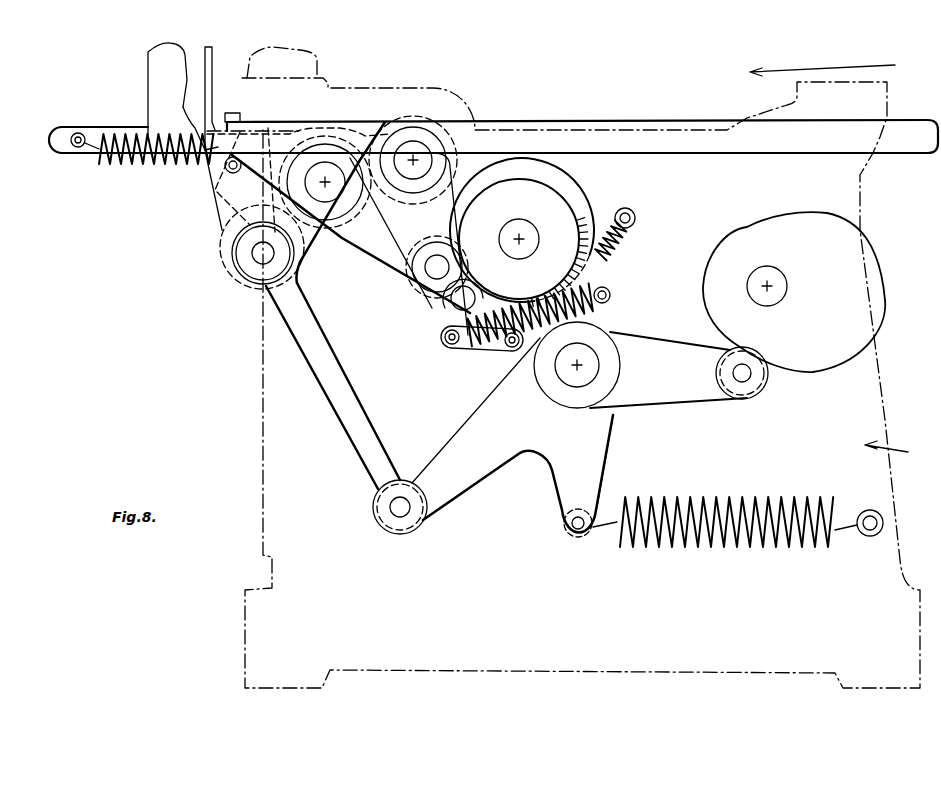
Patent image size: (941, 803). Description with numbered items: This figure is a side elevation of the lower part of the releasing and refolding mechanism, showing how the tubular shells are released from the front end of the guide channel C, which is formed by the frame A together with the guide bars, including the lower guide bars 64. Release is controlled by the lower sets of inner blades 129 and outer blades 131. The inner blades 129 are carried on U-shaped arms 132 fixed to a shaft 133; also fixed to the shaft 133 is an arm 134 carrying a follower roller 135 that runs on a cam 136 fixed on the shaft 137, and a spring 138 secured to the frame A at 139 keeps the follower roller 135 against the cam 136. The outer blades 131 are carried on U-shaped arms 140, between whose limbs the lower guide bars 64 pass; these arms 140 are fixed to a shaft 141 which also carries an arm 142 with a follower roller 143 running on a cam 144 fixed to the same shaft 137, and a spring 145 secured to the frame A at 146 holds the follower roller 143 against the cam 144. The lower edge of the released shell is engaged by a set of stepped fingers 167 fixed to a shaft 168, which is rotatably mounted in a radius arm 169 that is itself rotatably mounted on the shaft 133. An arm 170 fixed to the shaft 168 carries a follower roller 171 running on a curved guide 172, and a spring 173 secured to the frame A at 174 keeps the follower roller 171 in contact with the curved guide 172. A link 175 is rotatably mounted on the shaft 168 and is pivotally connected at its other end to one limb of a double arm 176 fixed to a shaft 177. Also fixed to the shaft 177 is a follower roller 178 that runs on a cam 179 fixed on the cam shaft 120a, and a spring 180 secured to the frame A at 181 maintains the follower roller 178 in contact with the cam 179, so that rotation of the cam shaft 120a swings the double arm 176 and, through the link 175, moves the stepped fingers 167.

The lower guide bars 64 is at (738, 140).
The stepped fingers 167 is at (208, 52).
The follower roller 171 is at (203, 110).
The curved guide 172 is at (203, 127).
The outer blades 131 is at (227, 113).
The inner blades 129 is at (235, 113).
The spring anchorage on frame 174 is at (87, 157).
The spring 173 is at (147, 163).
The arm 170 is at (217, 187).
The radius arm 169 is at (257, 198).
The shaft 168 is at (257, 255).
The U-shaped arms 132 is at (298, 272).
The link 175 is at (347, 413).
The shaft 133 is at (332, 190).
The arm 134 is at (395, 258).
The follower roller 143 is at (425, 287).
The arm 142 is at (440, 323).
The follower roller 135 is at (470, 342).
The U-shaped arms 140 is at (387, 122).
The shaft 141 is at (418, 155).
The cam 136 is at (563, 180).
The spring 138 is at (567, 243).
The shaft 137 is at (530, 237).
The spring anchorage on frame 139 is at (635, 218).
The cam 144 is at (607, 247).
The spring anchorage on frame 146 is at (612, 294).
The spring 145 is at (593, 317).
The shaft 177 is at (585, 380).
The follower roller 178 is at (763, 393).
The cam 179 is at (848, 350).
The cam shaft 120a is at (768, 283).
The double arm 176 is at (513, 445).
The spring 180 is at (732, 498).
The spring anchorage on frame 181 is at (870, 510).
The guide channel C is at (833, 67).
The frame A is at (894, 452).